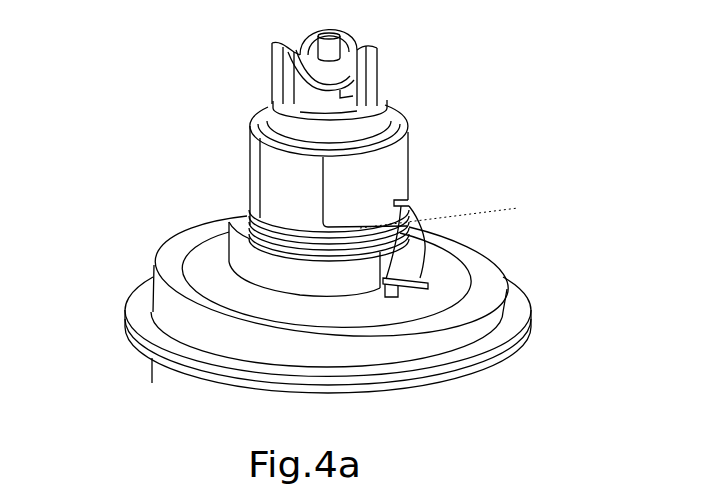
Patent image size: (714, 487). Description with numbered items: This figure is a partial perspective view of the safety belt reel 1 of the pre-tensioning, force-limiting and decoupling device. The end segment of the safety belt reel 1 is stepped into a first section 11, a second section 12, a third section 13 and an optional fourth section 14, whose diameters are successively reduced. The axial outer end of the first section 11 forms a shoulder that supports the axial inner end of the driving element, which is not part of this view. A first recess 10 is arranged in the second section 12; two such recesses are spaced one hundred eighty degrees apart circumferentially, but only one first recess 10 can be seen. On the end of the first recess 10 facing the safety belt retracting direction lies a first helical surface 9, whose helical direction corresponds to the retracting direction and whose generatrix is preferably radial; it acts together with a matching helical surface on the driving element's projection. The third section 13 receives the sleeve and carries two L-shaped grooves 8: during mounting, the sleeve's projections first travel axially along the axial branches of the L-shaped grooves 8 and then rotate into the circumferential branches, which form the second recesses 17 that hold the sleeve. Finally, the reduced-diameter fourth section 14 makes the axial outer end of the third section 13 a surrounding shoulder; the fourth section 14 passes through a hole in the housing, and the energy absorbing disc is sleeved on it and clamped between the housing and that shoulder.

The safety belt reel 1 is at (218, 342).
The L-shaped groove 8 is at (288, 202).
The first helical surface 9 is at (408, 252).
The first recess 10 is at (387, 266).
The first section 11 is at (163, 306).
The second section 12 is at (243, 260).
The third section 13 is at (250, 173).
The fourth section 14 is at (272, 109).
The second recess 17 is at (450, 217).